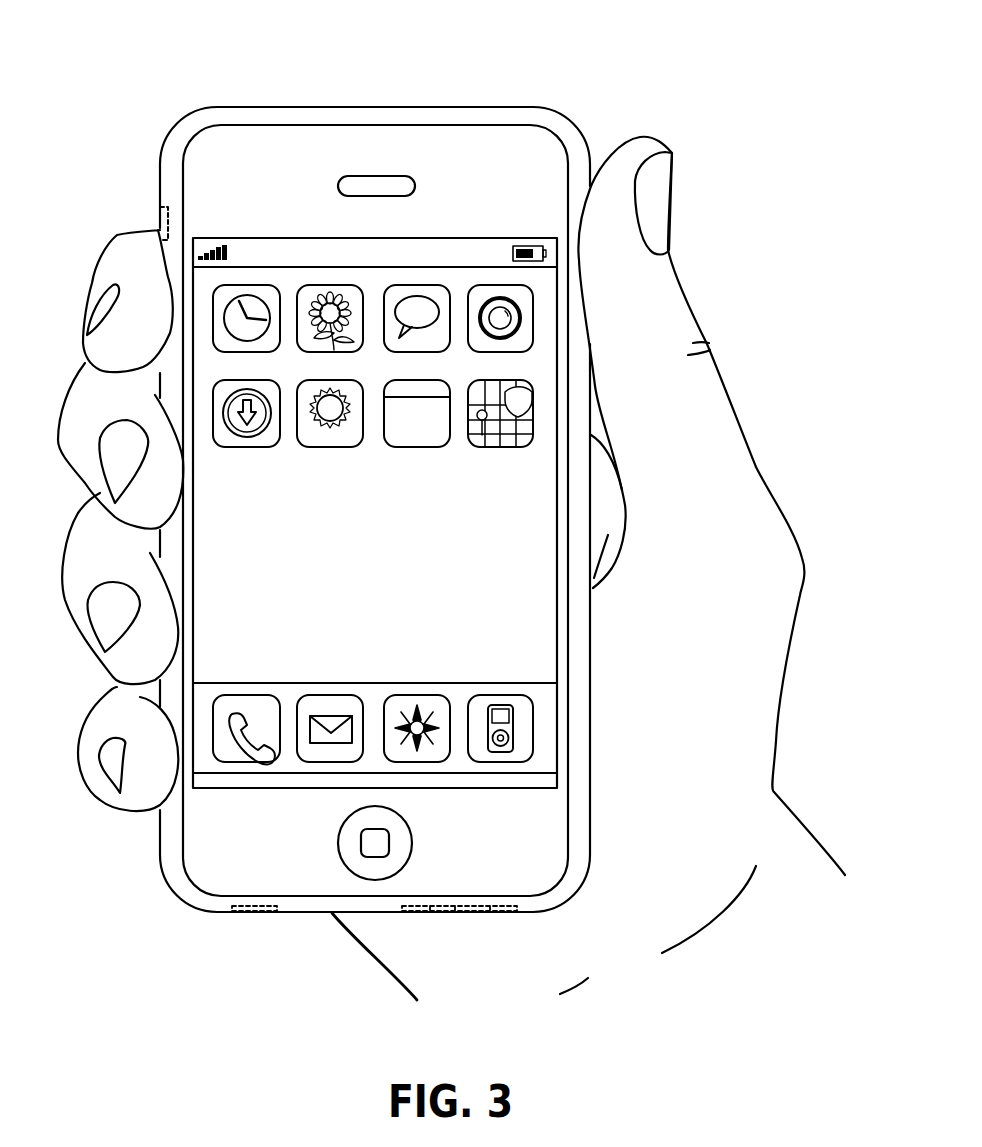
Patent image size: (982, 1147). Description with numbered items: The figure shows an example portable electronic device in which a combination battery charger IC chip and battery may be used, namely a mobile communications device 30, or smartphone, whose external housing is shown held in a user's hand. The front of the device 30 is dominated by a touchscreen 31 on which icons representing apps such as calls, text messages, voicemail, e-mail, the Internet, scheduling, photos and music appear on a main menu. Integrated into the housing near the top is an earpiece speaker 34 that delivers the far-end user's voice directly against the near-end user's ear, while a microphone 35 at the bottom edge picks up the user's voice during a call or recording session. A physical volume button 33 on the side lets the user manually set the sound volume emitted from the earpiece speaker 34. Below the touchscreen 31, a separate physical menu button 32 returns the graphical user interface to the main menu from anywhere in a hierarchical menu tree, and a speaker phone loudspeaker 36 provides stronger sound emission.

The mobile communications device 30 is at (577, 72).
The touchscreen 31 is at (381, 572).
The menu button 32 is at (357, 850).
The volume button 33 is at (160, 217).
The earpiece speaker 34 is at (383, 185).
The microphone 35 is at (247, 912).
The speaker phone loudspeaker 36 is at (463, 913).